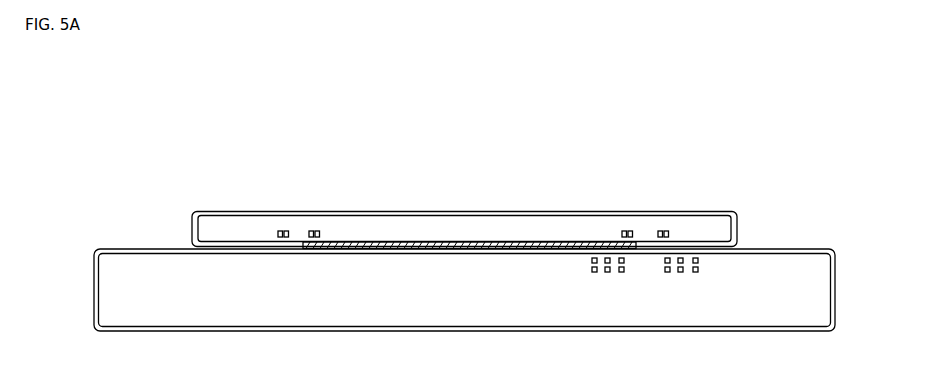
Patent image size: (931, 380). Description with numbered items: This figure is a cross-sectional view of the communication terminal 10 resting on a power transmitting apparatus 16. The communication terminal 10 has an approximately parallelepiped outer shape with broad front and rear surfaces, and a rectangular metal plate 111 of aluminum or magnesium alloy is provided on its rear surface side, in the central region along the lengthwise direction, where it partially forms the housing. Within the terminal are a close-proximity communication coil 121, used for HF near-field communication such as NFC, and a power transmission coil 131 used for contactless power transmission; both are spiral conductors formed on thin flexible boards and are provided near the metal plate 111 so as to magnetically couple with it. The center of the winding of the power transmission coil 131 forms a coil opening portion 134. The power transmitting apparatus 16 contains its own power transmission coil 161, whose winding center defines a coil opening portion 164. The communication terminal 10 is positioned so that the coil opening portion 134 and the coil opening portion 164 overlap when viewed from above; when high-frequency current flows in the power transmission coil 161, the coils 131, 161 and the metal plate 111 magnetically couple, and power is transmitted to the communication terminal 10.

The communication terminal 10 is at (207, 204).
The power transmitting apparatus 16 is at (120, 246).
The metal plate 111 is at (468, 242).
The close-proximity communication coil 121 is at (317, 230).
The power transmission coil 131 is at (623, 230).
The coil opening portion 134 is at (645, 230).
The power transmission coil 161 is at (682, 275).
The coil opening portion 164 is at (644, 272).